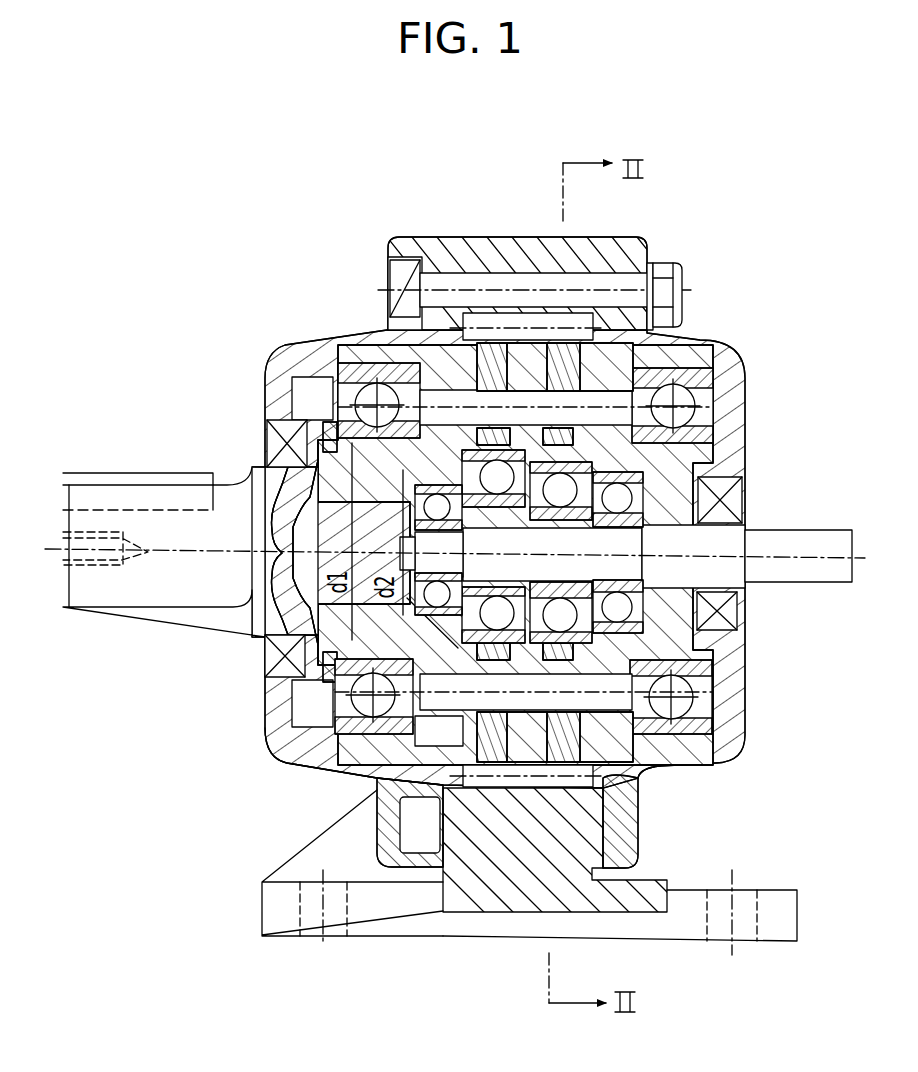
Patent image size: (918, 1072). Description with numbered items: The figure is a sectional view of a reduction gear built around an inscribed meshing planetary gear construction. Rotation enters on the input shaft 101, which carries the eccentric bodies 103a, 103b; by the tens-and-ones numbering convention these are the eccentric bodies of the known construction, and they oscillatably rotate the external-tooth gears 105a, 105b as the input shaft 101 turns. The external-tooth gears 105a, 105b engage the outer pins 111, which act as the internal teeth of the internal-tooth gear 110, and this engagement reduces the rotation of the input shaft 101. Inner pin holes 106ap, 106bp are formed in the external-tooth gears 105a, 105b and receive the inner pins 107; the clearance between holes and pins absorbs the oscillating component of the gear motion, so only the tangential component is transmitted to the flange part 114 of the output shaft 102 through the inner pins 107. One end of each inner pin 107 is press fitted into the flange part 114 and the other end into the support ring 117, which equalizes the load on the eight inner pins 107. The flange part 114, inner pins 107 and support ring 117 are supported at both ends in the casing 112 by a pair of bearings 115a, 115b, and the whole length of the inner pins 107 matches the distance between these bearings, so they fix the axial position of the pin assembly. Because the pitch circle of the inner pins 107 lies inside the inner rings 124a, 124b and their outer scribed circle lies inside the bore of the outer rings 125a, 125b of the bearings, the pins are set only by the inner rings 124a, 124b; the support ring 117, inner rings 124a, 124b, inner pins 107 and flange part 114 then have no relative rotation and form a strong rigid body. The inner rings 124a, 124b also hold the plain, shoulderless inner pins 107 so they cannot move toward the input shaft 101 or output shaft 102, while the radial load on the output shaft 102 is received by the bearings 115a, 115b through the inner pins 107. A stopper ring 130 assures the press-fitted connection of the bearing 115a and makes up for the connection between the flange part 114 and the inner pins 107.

The input shaft 101 is at (762, 545).
The output shaft 102 is at (128, 597).
The eccentric body 103a is at (437, 870).
The eccentric body 103b is at (298, 900).
The external-tooth gear 105a is at (643, 780).
The external-tooth gear 105b is at (587, 907).
The inner pin hole 106ap is at (590, 404).
The inner pin hole 106bp is at (405, 395).
The inner pin 107 is at (657, 340).
The internal-tooth gear 110 is at (590, 250).
The outer pin 111 is at (480, 318).
The casing 112 is at (272, 372).
The flange part 114 is at (438, 358).
The bearing 115a is at (700, 650).
The bearing 115b is at (110, 748).
The support ring 117 is at (598, 358).
The inner ring 124a is at (715, 694).
The inner ring 124b is at (283, 755).
The retainer 125a is at (720, 743).
The retainer 125b is at (335, 735).
The stopper ring 130 is at (267, 438).